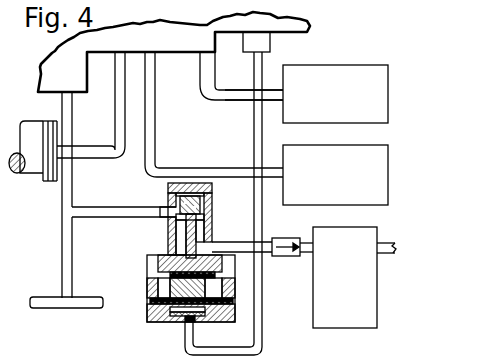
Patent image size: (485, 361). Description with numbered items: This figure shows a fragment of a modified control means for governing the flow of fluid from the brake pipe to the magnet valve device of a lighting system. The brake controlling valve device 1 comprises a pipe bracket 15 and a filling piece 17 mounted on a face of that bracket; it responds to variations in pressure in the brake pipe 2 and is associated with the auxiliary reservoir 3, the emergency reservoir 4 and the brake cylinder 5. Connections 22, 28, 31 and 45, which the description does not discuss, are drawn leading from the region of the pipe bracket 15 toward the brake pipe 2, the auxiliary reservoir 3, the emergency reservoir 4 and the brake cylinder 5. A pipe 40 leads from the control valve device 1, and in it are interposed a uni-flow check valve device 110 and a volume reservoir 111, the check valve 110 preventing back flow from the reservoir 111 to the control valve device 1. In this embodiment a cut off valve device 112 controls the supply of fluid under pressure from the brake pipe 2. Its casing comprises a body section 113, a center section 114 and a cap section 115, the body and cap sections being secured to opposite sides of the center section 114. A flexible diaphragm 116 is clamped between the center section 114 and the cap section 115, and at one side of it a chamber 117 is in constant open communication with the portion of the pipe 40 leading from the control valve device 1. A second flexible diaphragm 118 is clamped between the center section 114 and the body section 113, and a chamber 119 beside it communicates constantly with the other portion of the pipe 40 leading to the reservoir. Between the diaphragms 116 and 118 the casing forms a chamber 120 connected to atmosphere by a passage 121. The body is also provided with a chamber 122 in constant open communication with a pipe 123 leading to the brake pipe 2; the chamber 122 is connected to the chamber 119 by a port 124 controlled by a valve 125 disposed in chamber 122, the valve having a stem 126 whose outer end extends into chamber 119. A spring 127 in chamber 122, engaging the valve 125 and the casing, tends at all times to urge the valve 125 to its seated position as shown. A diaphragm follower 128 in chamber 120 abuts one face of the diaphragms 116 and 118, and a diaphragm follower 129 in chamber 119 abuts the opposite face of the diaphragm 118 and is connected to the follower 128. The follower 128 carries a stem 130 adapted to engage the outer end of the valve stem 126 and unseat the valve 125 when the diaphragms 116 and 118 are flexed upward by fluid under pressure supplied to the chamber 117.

The brake controlling valve device 1 is at (57, 64).
The brake pipe 2 is at (52, 287).
The auxiliary reservoir 3 is at (327, 72).
The emergency reservoir 4 is at (310, 153).
The brake cylinder 5 is at (37, 166).
The pipe bracket 15 is at (183, 44).
The filling piece 17 is at (283, 30).
The conduit 22 is at (72, 105).
The conduit 28 is at (235, 95).
The conduit 31 is at (151, 104).
The pipe 40 is at (254, 70).
The conduit 45 is at (88, 152).
The uni-flow check valve device 110 is at (361, 222).
The volume reservoir 111 is at (300, 238).
The cut off valve device 112 is at (143, 316).
The body section 113 is at (205, 222).
The center section 114 is at (228, 283).
The cap section 115 is at (232, 318).
The flexible diaphragm 116 is at (152, 320).
The chamber 117 is at (176, 320).
The flexible diaphragm 118 is at (148, 288).
The chamber 119 is at (168, 264).
The chamber 120 is at (148, 293).
The passage 121 is at (168, 270).
The chamber 122 is at (207, 192).
The pipe 123 is at (88, 208).
The port 124 is at (167, 228).
The valve 125 is at (203, 207).
The stem 126 is at (175, 245).
The spring 127 is at (167, 192).
The diaphragm follower 128 is at (196, 321).
The diaphragm follower 129 is at (216, 270).
The stem 130 is at (167, 249).